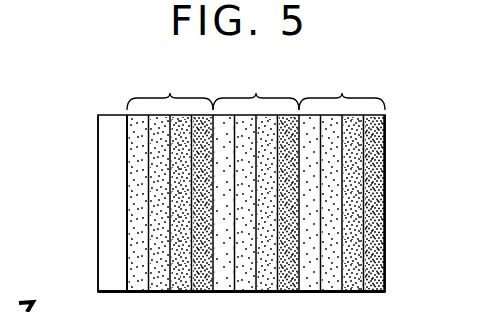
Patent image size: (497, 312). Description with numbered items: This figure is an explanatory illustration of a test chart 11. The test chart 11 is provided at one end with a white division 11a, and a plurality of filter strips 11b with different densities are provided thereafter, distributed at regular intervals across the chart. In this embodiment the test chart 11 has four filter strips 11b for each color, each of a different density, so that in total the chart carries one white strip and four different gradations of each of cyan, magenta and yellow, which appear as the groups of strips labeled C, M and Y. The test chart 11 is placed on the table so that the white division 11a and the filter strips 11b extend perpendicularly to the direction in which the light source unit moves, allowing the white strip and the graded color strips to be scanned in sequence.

The test chart 11 is at (252, 182).
The white division 11a is at (108, 195).
The filter strips 11b is at (137, 258).